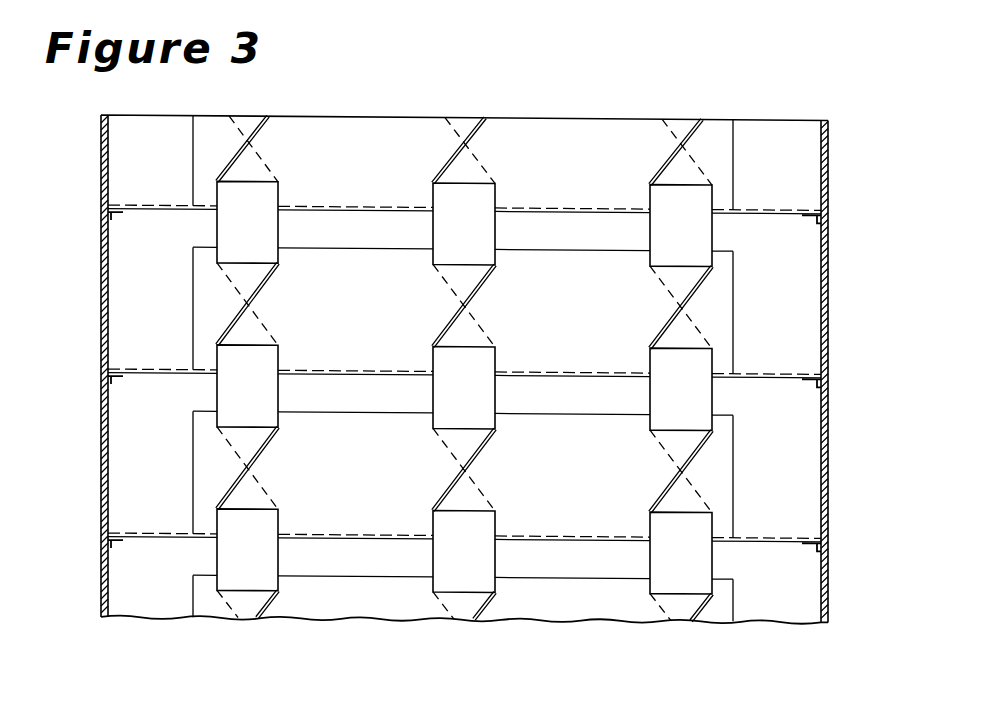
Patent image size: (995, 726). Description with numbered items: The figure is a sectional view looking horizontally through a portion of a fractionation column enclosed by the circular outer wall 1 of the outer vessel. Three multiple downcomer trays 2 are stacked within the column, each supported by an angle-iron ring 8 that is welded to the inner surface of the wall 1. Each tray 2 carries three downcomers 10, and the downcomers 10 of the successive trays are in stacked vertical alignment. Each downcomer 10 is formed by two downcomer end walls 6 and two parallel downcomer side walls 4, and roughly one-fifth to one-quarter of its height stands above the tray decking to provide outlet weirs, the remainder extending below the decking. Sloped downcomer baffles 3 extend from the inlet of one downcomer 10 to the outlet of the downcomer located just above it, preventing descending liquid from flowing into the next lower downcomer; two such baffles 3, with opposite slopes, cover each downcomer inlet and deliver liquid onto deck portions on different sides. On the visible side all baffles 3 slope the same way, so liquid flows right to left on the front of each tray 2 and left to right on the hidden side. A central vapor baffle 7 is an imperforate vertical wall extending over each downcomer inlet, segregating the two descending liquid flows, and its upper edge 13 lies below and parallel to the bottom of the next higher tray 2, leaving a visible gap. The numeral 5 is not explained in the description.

The outer wall 1 is at (831, 268).
The multiple downcomer tray 2 is at (570, 207).
The downcomer baffle 3 is at (457, 155).
The downcomer side wall 4 is at (496, 237).
The diagonal brace (solid) 5 is at (280, 182).
The downcomer end wall 6 is at (236, 234).
The central vapor baffle 7 is at (355, 168).
The angle-iron ring 8 is at (109, 218).
The downcomer 10 is at (498, 186).
The upper edge 13 is at (343, 248).